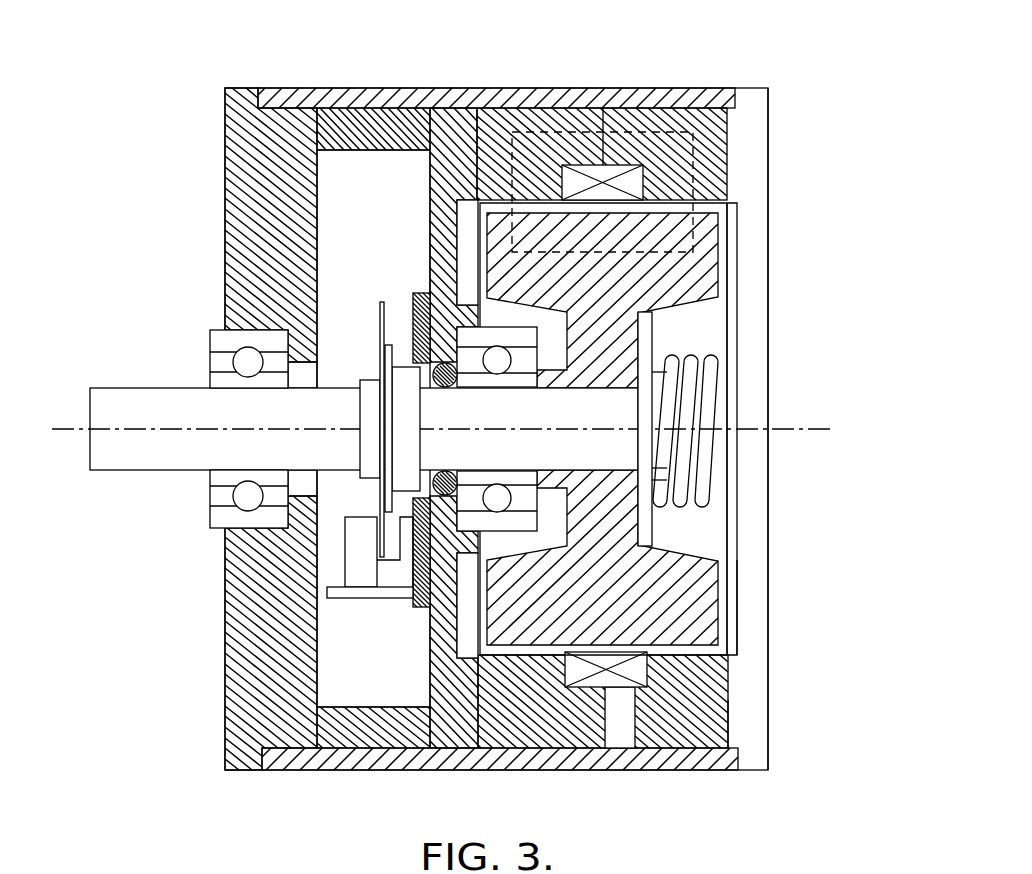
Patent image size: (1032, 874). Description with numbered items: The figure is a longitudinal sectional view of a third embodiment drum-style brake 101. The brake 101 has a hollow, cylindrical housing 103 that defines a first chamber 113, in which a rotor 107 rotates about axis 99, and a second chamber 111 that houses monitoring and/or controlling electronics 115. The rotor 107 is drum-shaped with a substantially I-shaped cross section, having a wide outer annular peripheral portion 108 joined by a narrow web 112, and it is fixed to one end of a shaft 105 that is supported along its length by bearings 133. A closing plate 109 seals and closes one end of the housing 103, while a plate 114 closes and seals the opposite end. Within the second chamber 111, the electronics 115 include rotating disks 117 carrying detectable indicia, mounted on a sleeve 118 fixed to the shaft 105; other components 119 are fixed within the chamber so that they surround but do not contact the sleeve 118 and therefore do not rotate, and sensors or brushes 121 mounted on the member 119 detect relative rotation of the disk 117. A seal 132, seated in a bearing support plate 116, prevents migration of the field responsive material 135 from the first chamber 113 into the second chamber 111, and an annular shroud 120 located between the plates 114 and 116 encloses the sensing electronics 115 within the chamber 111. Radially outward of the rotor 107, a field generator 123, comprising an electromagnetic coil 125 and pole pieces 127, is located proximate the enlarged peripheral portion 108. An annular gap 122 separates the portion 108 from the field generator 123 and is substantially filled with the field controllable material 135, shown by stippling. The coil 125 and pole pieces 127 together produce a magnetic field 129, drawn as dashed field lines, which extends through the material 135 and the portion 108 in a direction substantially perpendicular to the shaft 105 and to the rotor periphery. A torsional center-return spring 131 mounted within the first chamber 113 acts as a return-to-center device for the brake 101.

The axis 99 is at (812, 426).
The brake 101 is at (818, 52).
The housing 103 is at (352, 93).
The shaft 105 is at (132, 400).
The rotor 107 is at (710, 270).
The outer annular peripheral portion 108 is at (710, 227).
The closing plate 109 is at (762, 357).
The second chamber 111 is at (395, 160).
The web 112 is at (652, 352).
The first chamber 113 is at (720, 317).
The plate 114 is at (258, 677).
The monitoring and/or controlling electronics 115 is at (393, 265).
The bearing support plate 116 is at (453, 740).
The rotating disks 117 is at (378, 492).
The sleeve 118 is at (366, 437).
The components 119 is at (422, 583).
The annular shroud 120 is at (370, 117).
The sensors or brushes 121 is at (372, 573).
The annular gap 122 is at (490, 205).
The field generator 123 is at (716, 710).
The electromagnetic coil 125 is at (629, 482).
The pole pieces 127 is at (713, 677).
The magnetic field 129 is at (645, 112).
The torsional center-return spring 131 is at (718, 443).
The seal 132 is at (470, 429).
The bearings 133 is at (222, 333).
The field responsive material 135 is at (733, 622).